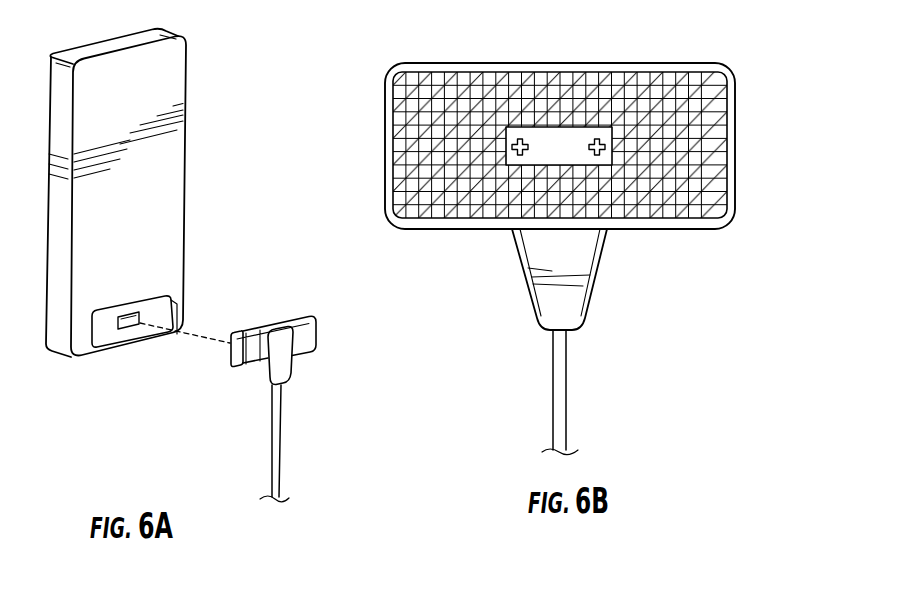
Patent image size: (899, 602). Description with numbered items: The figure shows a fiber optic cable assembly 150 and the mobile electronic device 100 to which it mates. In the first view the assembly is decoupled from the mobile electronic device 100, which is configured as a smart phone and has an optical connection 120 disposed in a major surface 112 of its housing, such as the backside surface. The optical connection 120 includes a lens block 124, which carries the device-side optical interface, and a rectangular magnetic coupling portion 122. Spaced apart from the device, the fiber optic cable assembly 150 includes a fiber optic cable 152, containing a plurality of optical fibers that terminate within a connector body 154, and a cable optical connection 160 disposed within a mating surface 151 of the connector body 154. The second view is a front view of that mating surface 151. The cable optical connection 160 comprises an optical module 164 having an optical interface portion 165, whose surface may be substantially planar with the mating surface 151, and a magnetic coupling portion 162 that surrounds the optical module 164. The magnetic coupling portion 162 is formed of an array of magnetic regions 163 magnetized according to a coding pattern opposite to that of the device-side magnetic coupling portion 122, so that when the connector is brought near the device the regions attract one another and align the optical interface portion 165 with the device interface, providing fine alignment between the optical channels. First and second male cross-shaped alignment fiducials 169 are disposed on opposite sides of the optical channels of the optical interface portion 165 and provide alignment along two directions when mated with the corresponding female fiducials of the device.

In FIG. 6A, the mobile electronic device 100 is at (215, 81).
In FIG. 6A, the major surface 112 is at (160, 240).
In FIG. 6A, the optical connection 120 is at (136, 350).
In FIG. 6A, the magnetic coupling portion 122 is at (102, 336).
In FIG. 6A, the lens block 124 is at (133, 316).
In FIG. 6A, the fiber optic cable assembly 150 is at (289, 392).
In FIG. 6B, the mating surface 151 is at (393, 107).
In FIG. 6A, the fiber optic cable 152 is at (270, 452).
In FIG. 6B, the fiber optic cable 152 is at (563, 380).
In FIG. 6A, the connector body 154 is at (323, 337).
In FIG. 6B, the connector body 154 is at (566, 144).
In FIG. 6B, the cable optical connection 160 is at (534, 144).
In FIG. 6B, the magnetic coupling portion 162 is at (660, 68).
In FIG. 6B, the magnetic regions 163 is at (523, 78).
In FIG. 6B, the optical module 164 is at (552, 168).
In FIG. 6B, the optical interface portion 165 is at (513, 133).
In FIG. 6B, the alignment fiducials 169 is at (590, 142).